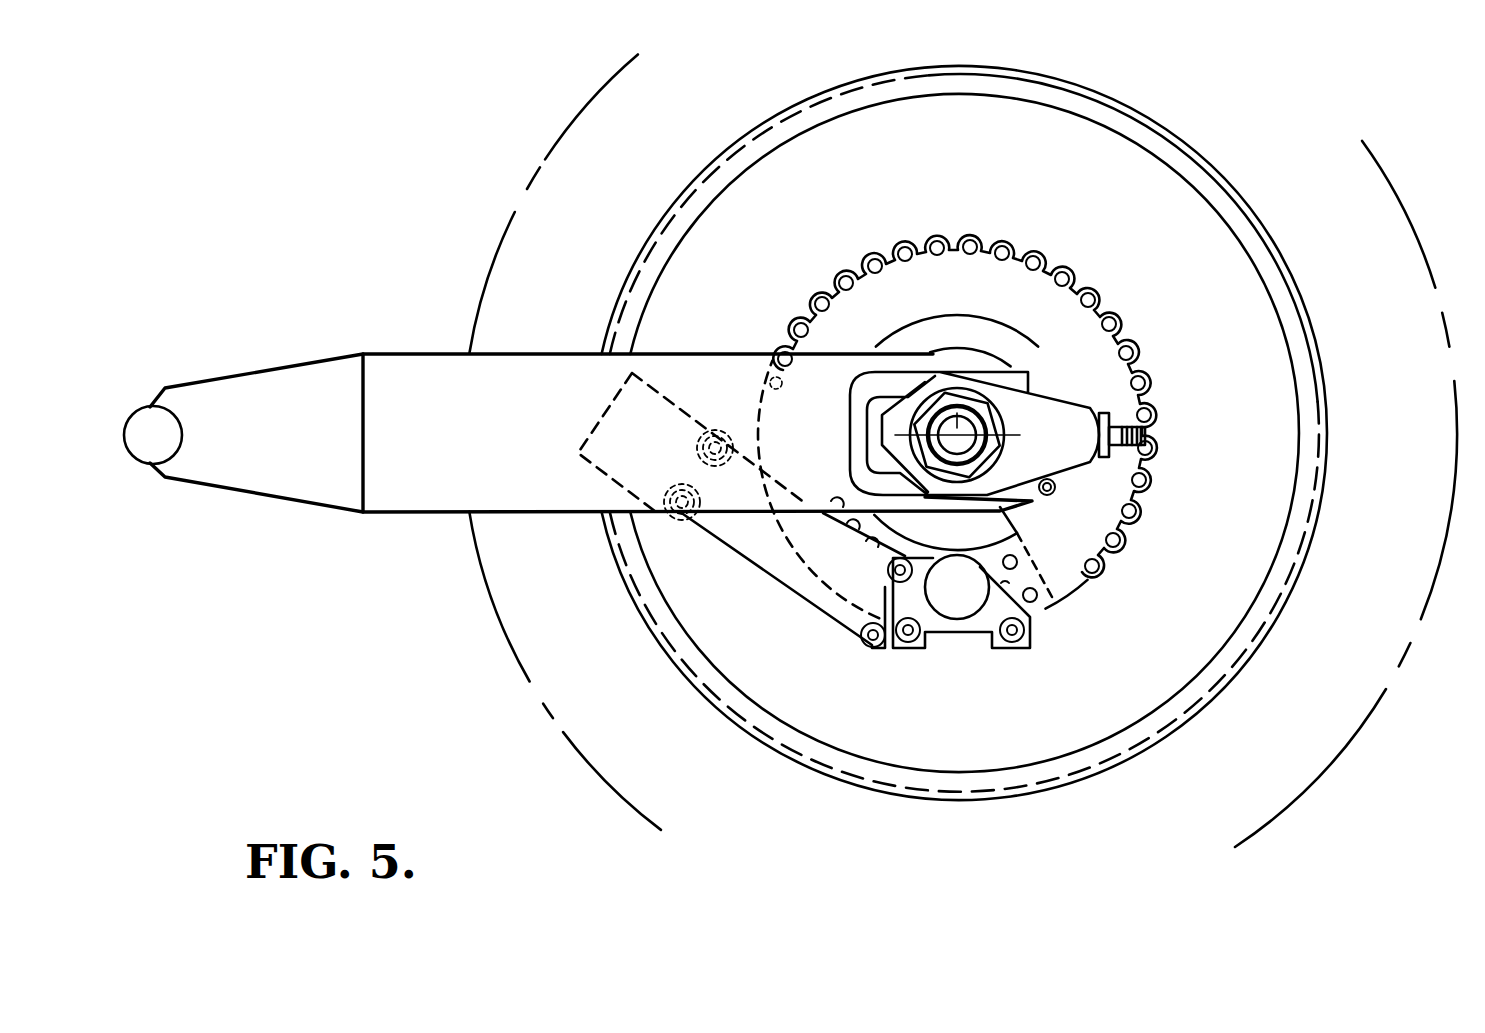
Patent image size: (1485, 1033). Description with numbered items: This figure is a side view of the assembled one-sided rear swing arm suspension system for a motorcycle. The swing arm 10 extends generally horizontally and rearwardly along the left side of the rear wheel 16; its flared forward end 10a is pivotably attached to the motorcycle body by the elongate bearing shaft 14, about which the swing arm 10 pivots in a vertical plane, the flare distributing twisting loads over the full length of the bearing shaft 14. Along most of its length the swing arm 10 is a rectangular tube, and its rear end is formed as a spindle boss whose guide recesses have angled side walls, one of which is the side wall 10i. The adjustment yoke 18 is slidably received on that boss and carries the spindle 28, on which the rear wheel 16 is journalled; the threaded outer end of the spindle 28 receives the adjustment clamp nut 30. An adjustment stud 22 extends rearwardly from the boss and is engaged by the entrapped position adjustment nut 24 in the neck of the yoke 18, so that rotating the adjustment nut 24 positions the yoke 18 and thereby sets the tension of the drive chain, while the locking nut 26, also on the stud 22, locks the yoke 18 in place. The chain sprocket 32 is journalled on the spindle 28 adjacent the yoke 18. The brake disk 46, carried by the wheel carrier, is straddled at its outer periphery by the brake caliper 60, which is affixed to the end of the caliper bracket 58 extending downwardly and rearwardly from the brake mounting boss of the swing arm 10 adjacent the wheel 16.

The one-sided rear swing arm 10 is at (338, 520).
The forward end of the swing arm 10a is at (256, 421).
The side wall of the outer guide recess 10i is at (887, 402).
The bearing shaft 14 is at (150, 397).
The rear wheel 16 is at (963, 451).
The adjustment yoke 18 is at (1067, 377).
The adjustment stud 22 is at (1165, 435).
The entrapped position adjustment nut 24 is at (1124, 404).
The locking nut 26 is at (1155, 408).
The spindle 28 is at (957, 369).
The adjustment clamp nut 30 is at (960, 380).
The chain sprocket 32 is at (996, 557).
The brake disk 46 is at (957, 414).
The caliper bracket 58 is at (741, 510).
The brake caliper 60 is at (956, 600).